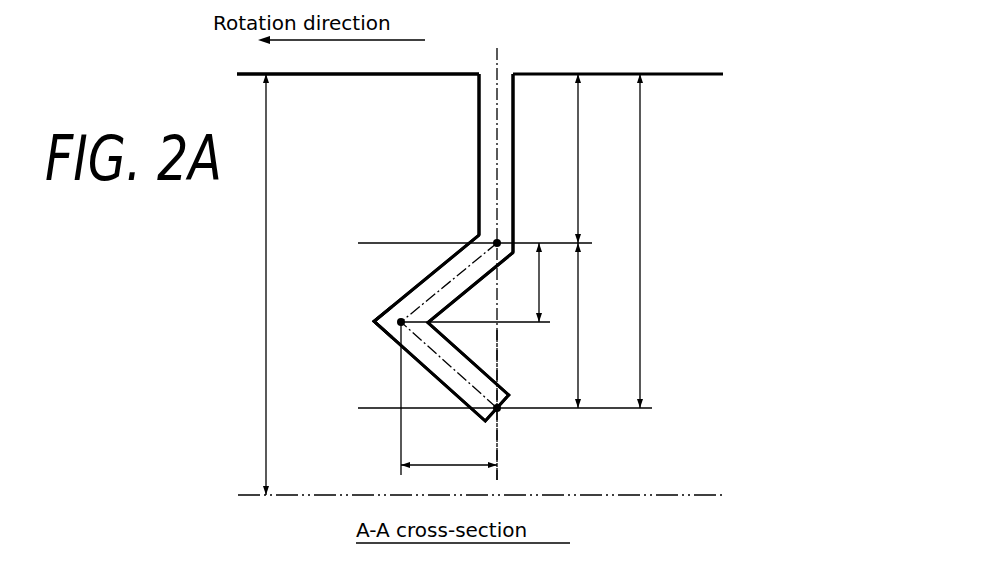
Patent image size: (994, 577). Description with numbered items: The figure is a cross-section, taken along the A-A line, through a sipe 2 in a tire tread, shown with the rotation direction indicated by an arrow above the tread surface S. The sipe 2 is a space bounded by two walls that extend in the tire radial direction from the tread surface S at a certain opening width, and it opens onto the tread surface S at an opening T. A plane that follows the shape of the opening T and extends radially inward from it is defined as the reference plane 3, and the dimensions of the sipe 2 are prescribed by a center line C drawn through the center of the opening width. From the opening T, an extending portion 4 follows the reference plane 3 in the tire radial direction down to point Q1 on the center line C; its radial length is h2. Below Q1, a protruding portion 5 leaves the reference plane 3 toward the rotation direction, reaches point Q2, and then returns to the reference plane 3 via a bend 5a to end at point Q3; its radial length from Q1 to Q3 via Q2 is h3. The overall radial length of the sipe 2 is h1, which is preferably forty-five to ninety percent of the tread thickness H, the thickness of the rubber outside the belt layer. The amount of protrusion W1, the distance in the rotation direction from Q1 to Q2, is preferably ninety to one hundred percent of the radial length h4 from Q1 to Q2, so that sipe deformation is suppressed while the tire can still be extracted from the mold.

The sipe 2 is at (503, 90).
The reference plane 3 is at (497, 335).
The extending portion 4 is at (355, 74).
The protruding portion 5 is at (356, 243).
The bend 5a is at (387, 327).
The tread surface S is at (668, 74).
The opening T is at (490, 75).
The center line C is at (497, 251).
The point Q1 is at (497, 243).
The point Q2 is at (401, 322).
The point Q3 is at (500, 412).
The radial length of the sipe h1 is at (652, 241).
The radial length of the extending portion h2 is at (591, 158).
The radial length of the protruding portion h3 is at (591, 325).
The radial length from Q1 to Q2 h4 is at (553, 282).
The tread thickness H is at (257, 284).
The amount of protrusion W1 is at (449, 452).